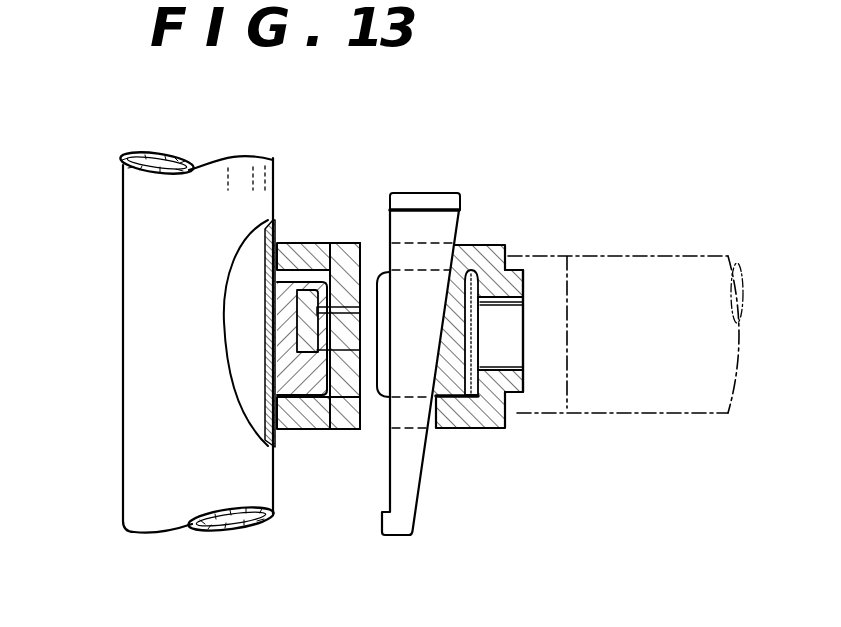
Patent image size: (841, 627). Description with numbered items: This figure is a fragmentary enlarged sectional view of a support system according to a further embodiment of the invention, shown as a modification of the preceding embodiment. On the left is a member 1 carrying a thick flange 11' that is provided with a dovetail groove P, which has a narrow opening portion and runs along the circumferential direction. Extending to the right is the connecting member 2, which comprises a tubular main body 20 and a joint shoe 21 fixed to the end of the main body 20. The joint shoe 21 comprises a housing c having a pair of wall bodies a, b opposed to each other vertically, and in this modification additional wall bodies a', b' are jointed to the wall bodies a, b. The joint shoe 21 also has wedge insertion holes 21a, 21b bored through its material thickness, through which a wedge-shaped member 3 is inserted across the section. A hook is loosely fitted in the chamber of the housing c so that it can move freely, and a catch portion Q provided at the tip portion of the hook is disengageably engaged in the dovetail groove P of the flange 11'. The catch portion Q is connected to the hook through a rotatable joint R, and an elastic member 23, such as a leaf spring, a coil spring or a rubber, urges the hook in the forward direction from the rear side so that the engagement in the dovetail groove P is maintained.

The first pipe 1 is at (193, 540).
The connecting member 2 is at (584, 243).
The lever pin 3 is at (434, 190).
The thick flange 11' is at (167, 324).
The tubular main body 20 is at (586, 393).
The joint shoe 21 is at (510, 430).
The wedge insertion hole 21a is at (468, 256).
The wedge insertion hole 21b is at (433, 430).
The elastic member 23 is at (482, 323).
The dovetail groove P is at (268, 418).
The catch portion Q is at (268, 318).
The rotatable joint R is at (481, 344).
The wall body a is at (346, 295).
The wall body a' is at (303, 216).
The wall body b is at (346, 502).
The wall body b' is at (303, 502).
The housing c is at (477, 437).